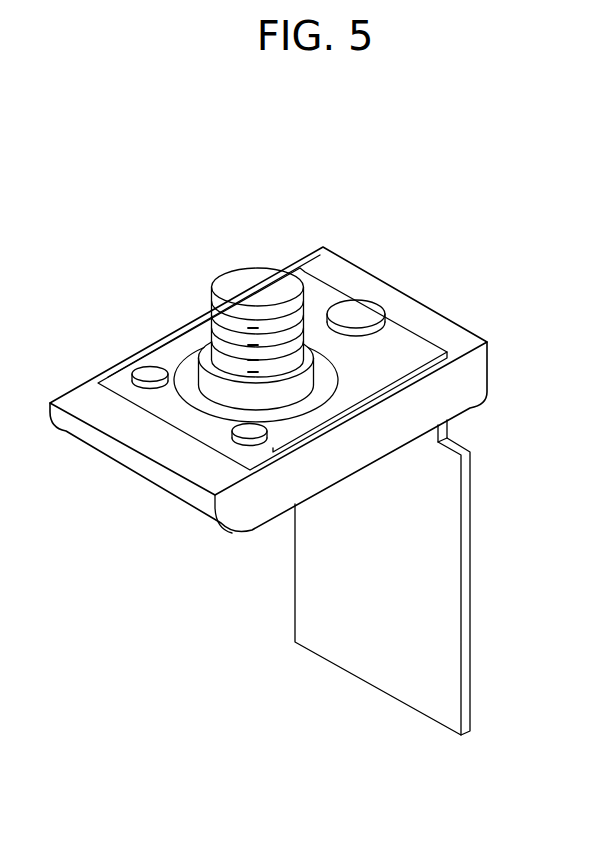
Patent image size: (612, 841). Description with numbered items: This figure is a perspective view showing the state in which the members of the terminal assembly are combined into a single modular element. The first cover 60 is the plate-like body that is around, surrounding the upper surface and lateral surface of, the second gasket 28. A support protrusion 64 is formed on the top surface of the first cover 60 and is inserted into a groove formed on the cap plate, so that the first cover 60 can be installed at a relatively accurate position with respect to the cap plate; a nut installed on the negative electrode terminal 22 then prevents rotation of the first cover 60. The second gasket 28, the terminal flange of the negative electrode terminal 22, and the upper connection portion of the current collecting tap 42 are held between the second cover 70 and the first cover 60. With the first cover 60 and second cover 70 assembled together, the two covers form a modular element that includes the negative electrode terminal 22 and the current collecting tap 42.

The negative electrode terminal 22 is at (238, 283).
The second gasket 28 is at (217, 387).
The current collecting tap 42 is at (390, 647).
The first cover 60 is at (428, 328).
The support protrusion 64 is at (357, 313).
The second cover 70 is at (186, 493).